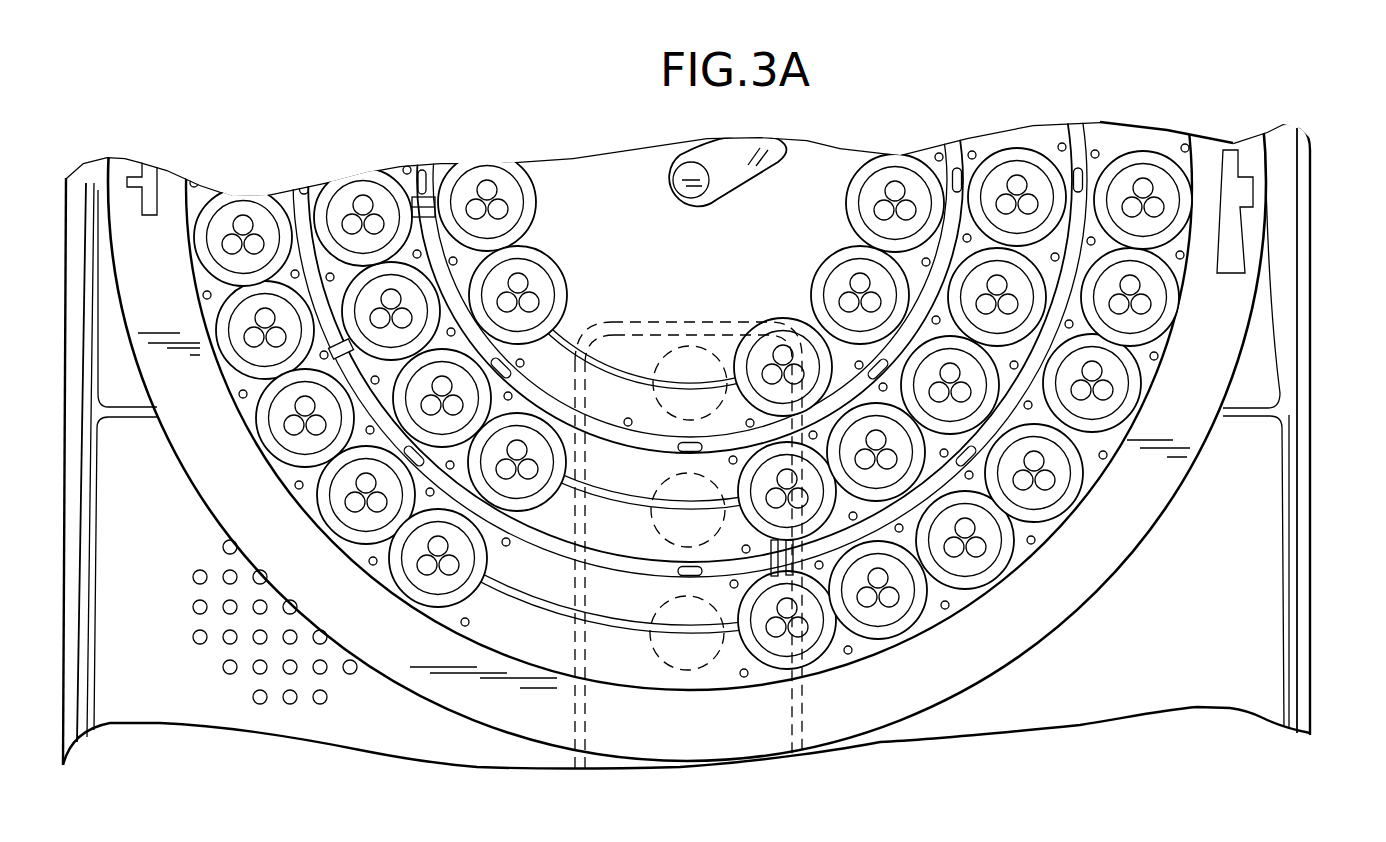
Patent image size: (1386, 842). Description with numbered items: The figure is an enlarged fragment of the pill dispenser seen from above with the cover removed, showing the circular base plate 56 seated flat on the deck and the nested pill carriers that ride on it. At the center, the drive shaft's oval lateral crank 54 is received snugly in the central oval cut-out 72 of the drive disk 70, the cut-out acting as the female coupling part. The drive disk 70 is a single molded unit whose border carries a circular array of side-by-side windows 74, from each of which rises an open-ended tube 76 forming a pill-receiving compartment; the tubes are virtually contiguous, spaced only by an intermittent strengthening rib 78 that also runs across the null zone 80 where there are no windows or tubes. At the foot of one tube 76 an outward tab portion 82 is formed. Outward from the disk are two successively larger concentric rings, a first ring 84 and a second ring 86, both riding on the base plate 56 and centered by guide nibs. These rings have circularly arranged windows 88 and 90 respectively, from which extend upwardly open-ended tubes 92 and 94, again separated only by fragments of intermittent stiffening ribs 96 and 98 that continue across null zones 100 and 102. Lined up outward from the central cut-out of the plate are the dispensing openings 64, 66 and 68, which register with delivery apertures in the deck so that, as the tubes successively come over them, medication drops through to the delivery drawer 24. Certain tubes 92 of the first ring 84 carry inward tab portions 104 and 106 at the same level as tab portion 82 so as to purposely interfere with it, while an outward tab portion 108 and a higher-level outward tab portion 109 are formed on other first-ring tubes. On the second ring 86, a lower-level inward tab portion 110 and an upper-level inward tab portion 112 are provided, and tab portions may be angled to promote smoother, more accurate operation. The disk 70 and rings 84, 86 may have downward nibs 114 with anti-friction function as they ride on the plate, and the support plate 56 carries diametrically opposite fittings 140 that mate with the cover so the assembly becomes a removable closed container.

The delivery drawer 24 is at (668, 728).
The oval lateral crank 54 is at (728, 172).
The circular base plate 56 is at (1023, 634).
The dispensing opening 64 is at (710, 328).
The dispensing opening 66 is at (648, 534).
The dispensing opening 68 is at (647, 662).
The drive disk 70 is at (636, 250).
The central oval cut-out 72 is at (754, 152).
The windows 74 is at (530, 277).
The open-ended tube 76 is at (556, 286).
The intermittent strengthening rib 78 is at (585, 342).
The null zone 80 is at (653, 348).
The outward tab portion 82 is at (432, 188).
The first ring 84 is at (1058, 133).
The second ring 86 is at (1174, 143).
The windows 88 is at (364, 190).
The windows 90 is at (243, 213).
The open-ended tubes 92 is at (992, 165).
The open-ended tubes 94 is at (1123, 157).
The intermittent stiffening rib 96 is at (588, 498).
The intermittent stiffening rib 98 is at (547, 608).
The null zone 100 is at (627, 503).
The null zone 102 is at (592, 612).
The inward tab portion 104 is at (551, 410).
The inward tab portion 106 is at (410, 192).
The outward tab portion 108 is at (303, 192).
The outward tab portion 109 is at (738, 645).
The inward tab portion 110 is at (490, 548).
The inward tab portion 112 is at (872, 612).
The downward nibs 114 is at (1043, 540).
The fittings 140 is at (1238, 238).